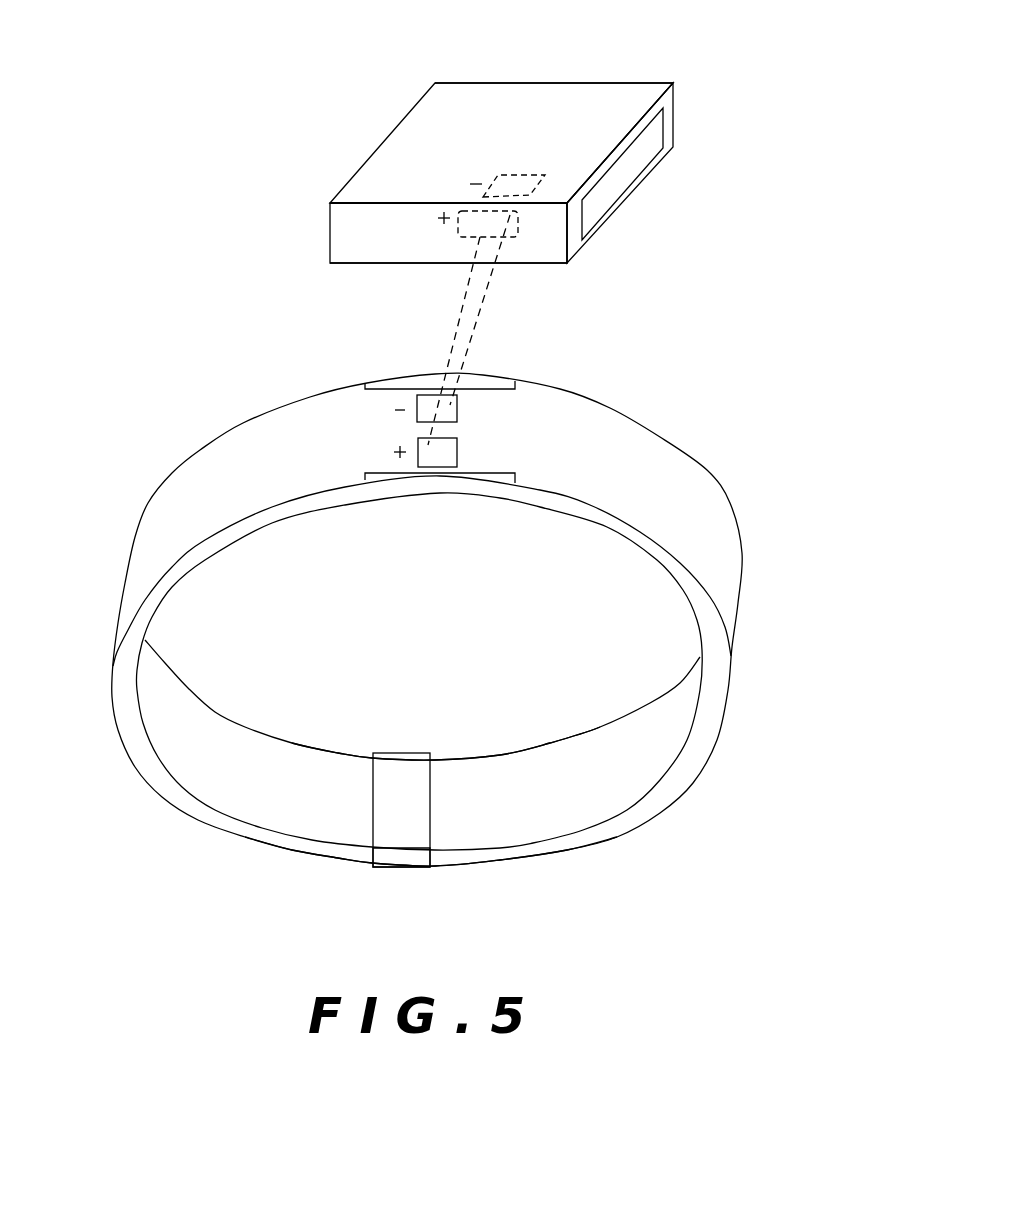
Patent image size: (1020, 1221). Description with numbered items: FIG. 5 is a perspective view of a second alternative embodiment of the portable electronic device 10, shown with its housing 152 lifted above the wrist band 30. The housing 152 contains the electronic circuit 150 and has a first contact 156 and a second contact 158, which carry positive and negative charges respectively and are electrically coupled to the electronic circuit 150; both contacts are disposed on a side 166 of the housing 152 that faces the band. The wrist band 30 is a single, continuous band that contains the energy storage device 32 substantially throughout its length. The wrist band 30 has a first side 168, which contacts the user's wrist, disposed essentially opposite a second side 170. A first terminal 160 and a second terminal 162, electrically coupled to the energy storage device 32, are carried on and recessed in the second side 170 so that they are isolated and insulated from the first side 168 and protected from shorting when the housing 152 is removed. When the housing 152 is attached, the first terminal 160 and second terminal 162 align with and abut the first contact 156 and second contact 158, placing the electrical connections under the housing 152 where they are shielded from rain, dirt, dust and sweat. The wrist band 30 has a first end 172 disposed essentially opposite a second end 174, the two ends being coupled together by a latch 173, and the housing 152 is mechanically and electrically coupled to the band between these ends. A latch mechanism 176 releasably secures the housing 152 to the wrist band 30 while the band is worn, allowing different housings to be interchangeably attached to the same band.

The portable electronic device 10 is at (757, 852).
The wrist band 30 is at (712, 510).
The energy storage device 32 is at (660, 445).
The electronic circuit 150 is at (663, 148).
The housing 152 is at (602, 93).
The first contact 156 is at (457, 230).
The second contact 158 is at (510, 180).
The first terminal 160 is at (455, 453).
The second terminal 162 is at (457, 403).
The side of the housing 166 is at (547, 243).
The first side of the wrist band 168 is at (522, 782).
The second side of the wrist band 170 is at (263, 445).
The first end of the wrist band 172 is at (343, 853).
The latch 173 is at (398, 860).
The second end of the wrist band 174 is at (443, 857).
The latch mechanism 176 is at (382, 385).